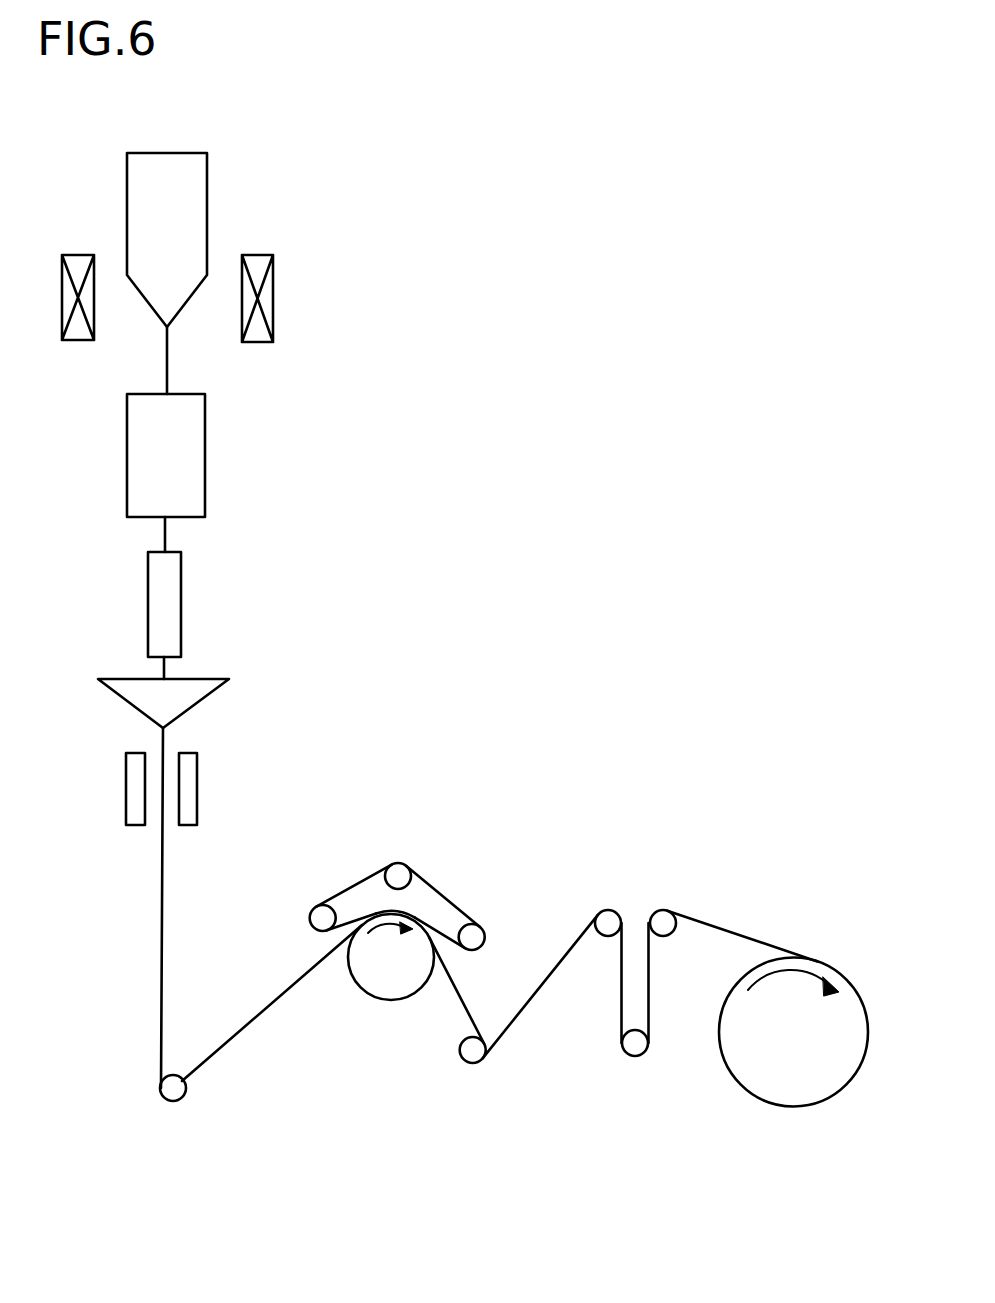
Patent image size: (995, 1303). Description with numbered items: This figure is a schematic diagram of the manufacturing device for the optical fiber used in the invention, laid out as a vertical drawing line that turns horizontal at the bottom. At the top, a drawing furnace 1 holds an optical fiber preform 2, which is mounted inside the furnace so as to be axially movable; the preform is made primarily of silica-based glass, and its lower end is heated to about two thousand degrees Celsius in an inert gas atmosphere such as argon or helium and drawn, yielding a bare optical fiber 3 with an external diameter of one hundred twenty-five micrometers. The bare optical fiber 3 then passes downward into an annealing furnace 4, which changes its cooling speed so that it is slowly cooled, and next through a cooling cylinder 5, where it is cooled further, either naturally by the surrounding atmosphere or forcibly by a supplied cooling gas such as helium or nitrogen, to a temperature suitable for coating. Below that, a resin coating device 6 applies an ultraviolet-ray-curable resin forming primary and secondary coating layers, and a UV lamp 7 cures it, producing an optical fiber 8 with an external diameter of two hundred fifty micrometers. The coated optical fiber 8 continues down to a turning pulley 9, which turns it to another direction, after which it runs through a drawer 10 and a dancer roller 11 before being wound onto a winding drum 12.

The drawing furnace 1 is at (273, 295).
The optical fiber preform 2 is at (207, 205).
The bare optical fiber 3 is at (167, 360).
The annealing furnace 4 is at (205, 450).
The cooling cylinder 5 is at (181, 603).
The resin coating device 6 is at (215, 688).
The UV lamp 7 is at (197, 787).
The optical fiber 8 is at (161, 1028).
The turning pulley 9 is at (161, 1089).
The drawer 10 is at (395, 1000).
The dancer roller 11 is at (635, 1058).
The winding drum 12 is at (793, 1107).